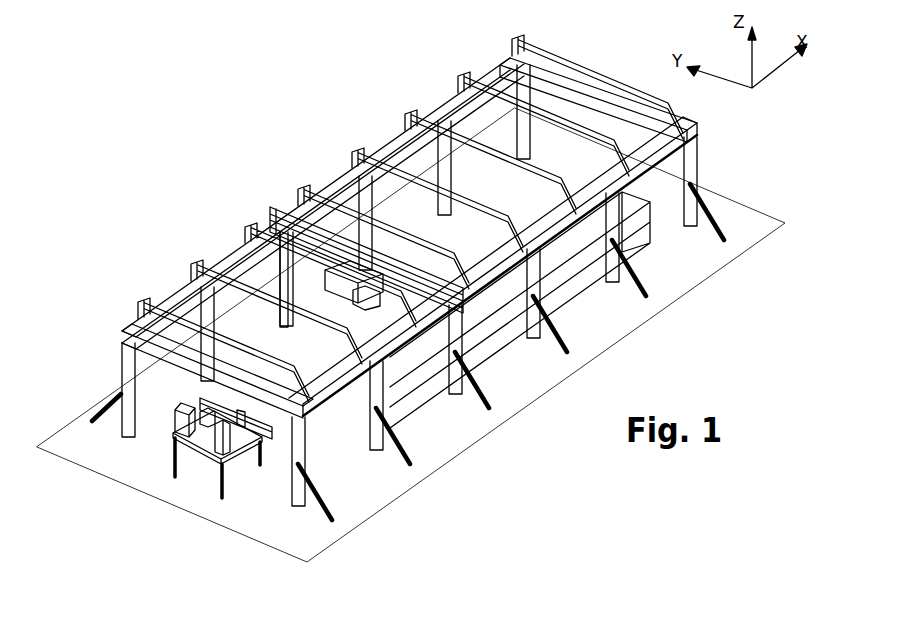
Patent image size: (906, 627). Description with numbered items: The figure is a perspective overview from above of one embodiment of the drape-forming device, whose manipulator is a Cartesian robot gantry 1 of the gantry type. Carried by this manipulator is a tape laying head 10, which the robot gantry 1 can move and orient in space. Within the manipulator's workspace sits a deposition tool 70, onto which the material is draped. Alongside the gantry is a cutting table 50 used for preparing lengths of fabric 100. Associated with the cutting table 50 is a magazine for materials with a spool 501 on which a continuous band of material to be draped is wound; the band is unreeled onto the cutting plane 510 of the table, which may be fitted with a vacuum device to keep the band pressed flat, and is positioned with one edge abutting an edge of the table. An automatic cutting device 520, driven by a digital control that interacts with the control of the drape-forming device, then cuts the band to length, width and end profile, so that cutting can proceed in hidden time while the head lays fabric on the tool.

The robot gantry 1 is at (478, 282).
The tape laying head 10 is at (372, 312).
The cutting table 50 is at (181, 490).
The deposition tool 70 is at (410, 218).
The lengths of fabric 100 is at (313, 362).
The spool 501 is at (193, 422).
The cutting plane 510 is at (207, 264).
The automatic cutting device 520 is at (250, 432).